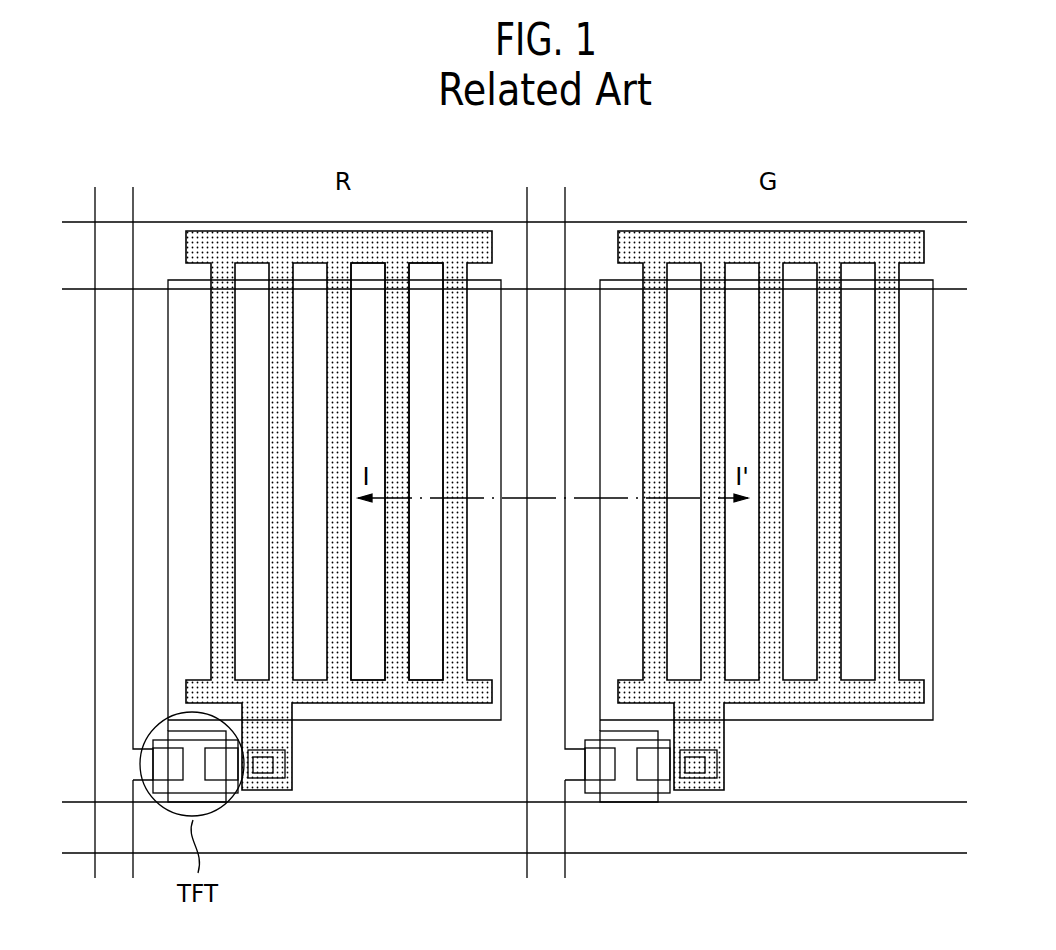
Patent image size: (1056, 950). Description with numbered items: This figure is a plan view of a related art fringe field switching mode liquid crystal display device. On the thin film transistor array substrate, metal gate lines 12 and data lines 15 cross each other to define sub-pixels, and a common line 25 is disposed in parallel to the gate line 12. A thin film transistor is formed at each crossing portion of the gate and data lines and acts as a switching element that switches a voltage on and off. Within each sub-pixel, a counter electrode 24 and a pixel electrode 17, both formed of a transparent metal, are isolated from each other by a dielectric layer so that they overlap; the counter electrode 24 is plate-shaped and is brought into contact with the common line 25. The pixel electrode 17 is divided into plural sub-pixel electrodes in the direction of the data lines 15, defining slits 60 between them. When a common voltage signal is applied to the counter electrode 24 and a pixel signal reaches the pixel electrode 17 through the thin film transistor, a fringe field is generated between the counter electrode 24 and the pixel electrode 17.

The gate line 12 is at (353, 830).
The data line 15 is at (113, 202).
The pixel electrode 17 is at (883, 530).
The counter electrode 24 is at (932, 547).
The common line 25 is at (167, 233).
The slit 60 is at (430, 673).